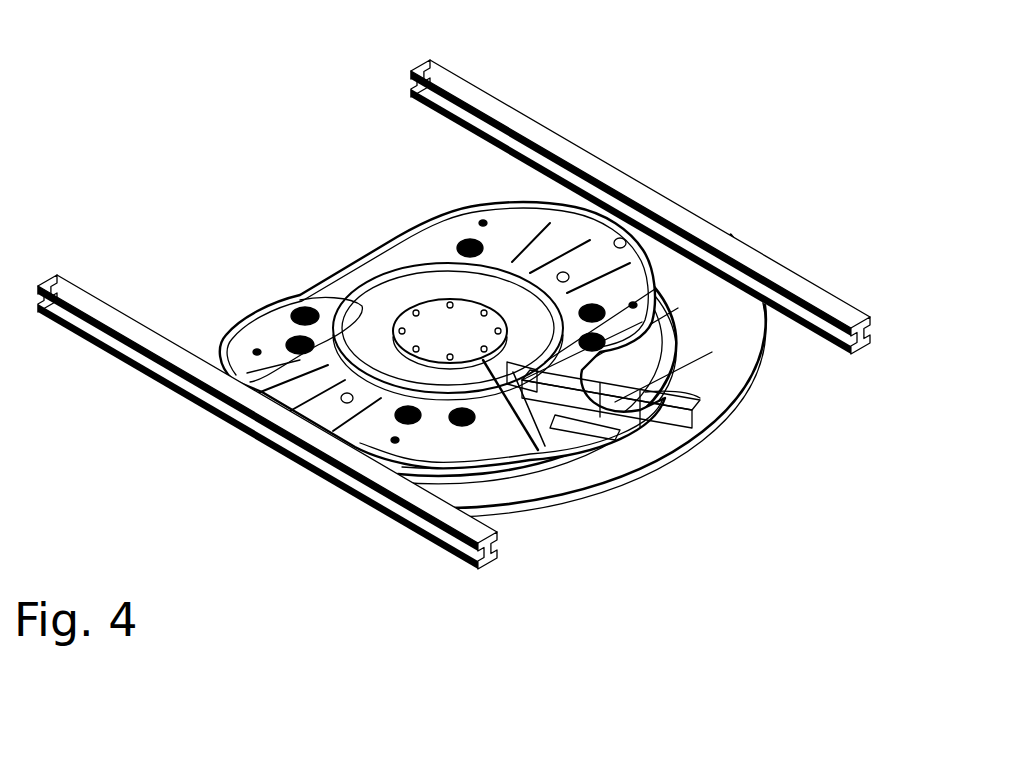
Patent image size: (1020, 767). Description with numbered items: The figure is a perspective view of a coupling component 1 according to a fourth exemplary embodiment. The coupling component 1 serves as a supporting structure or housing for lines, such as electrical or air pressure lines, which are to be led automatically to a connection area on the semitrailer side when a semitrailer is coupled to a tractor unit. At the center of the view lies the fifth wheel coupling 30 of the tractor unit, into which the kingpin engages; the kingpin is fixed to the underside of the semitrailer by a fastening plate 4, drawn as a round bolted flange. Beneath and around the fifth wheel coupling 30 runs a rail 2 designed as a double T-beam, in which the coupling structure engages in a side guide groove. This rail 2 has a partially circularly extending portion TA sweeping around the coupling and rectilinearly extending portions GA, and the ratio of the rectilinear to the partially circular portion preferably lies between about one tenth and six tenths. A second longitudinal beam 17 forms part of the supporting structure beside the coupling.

The coupling component 1 is at (605, 370).
The rail 2 is at (693, 440).
The fastening plate 4 is at (447, 325).
The second longitudinal beam 17 is at (713, 414).
The fifth wheel coupling 30 is at (515, 233).
The rectilinearly extending portion GA is at (665, 183).
The partially circularly extending portion TA is at (601, 506).